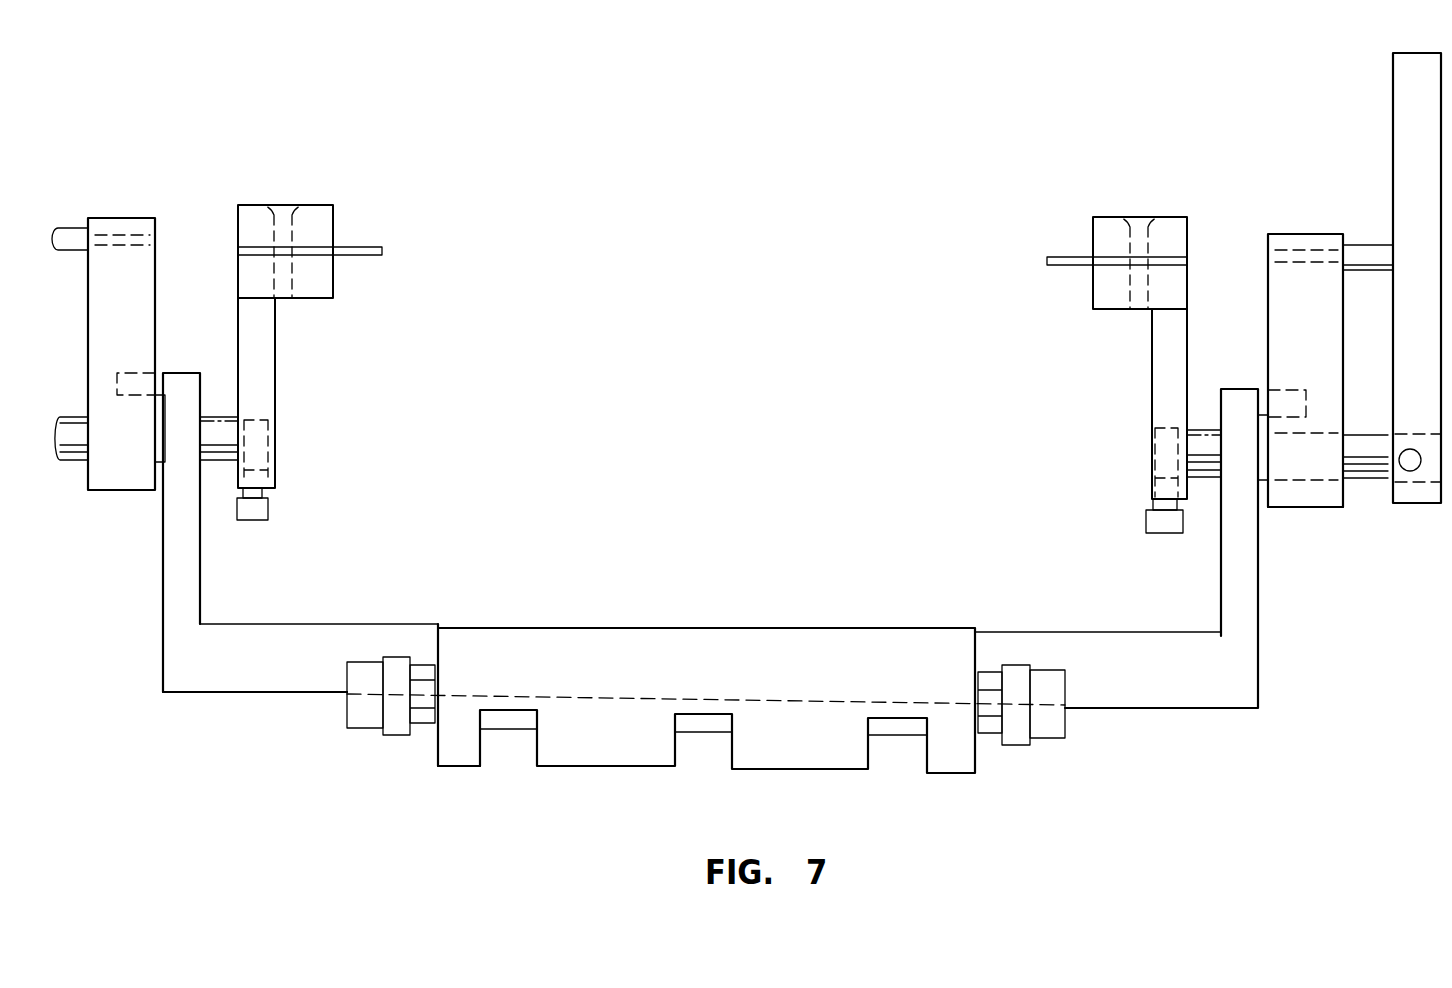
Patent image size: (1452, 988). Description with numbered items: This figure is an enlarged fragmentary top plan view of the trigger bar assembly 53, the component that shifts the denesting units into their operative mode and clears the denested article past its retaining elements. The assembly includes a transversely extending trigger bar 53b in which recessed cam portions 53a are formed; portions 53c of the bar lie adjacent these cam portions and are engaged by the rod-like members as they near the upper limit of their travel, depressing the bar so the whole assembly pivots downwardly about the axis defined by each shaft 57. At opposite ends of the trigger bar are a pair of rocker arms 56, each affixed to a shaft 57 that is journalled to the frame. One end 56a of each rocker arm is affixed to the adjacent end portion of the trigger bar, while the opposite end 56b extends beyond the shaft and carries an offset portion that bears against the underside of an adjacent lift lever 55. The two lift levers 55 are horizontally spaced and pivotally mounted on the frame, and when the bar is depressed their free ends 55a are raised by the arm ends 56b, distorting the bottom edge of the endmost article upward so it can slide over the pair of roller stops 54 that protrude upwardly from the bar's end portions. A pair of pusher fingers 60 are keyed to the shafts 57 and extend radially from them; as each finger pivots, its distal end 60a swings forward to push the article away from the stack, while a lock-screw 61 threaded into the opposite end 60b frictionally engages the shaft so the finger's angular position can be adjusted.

The trigger bar assembly 53 is at (714, 624).
The recessed cam portion 53a is at (506, 752).
The trigger bar 53b is at (537, 645).
The bar portions 53c is at (448, 766).
The roller stops 54 is at (386, 746).
The lift levers 55 is at (155, 325).
The free ends of lift levers 55a is at (1313, 500).
The rocker arms 56 is at (168, 573).
The rocker arm end 56a is at (181, 688).
The opposite rocker arm end 56b is at (168, 388).
The shaft 57 is at (222, 458).
The pusher fingers 60 is at (283, 350).
The distal end of pusher finger 60a is at (386, 260).
The opposite end of pusher finger 60b is at (275, 467).
The lock-screw 61 is at (258, 512).